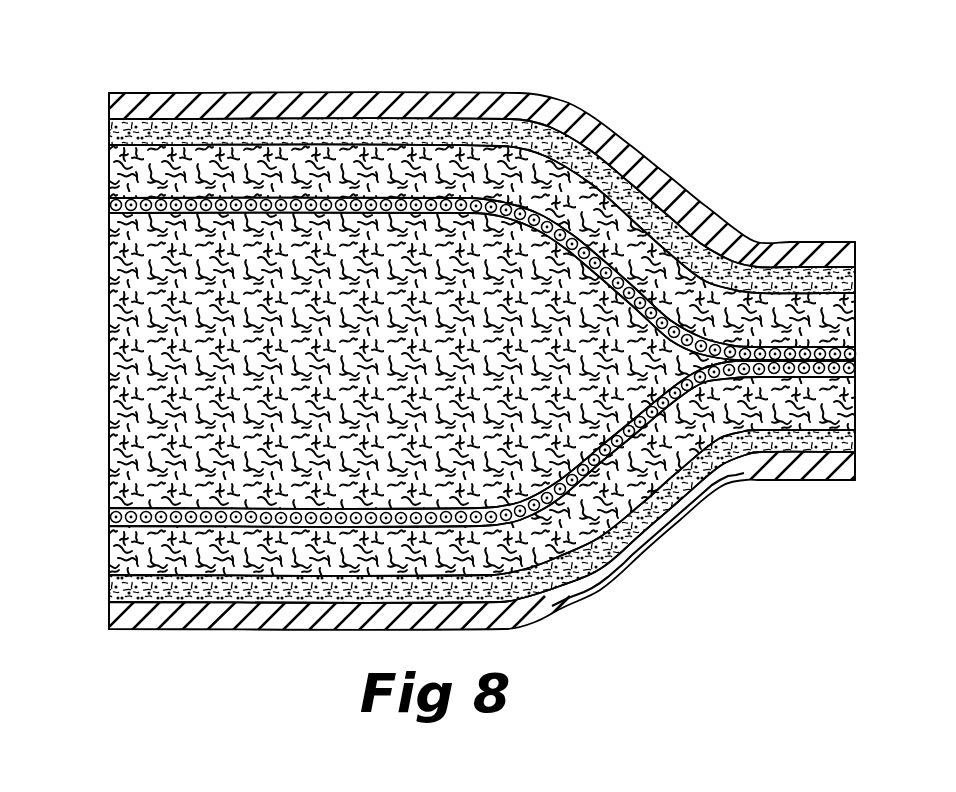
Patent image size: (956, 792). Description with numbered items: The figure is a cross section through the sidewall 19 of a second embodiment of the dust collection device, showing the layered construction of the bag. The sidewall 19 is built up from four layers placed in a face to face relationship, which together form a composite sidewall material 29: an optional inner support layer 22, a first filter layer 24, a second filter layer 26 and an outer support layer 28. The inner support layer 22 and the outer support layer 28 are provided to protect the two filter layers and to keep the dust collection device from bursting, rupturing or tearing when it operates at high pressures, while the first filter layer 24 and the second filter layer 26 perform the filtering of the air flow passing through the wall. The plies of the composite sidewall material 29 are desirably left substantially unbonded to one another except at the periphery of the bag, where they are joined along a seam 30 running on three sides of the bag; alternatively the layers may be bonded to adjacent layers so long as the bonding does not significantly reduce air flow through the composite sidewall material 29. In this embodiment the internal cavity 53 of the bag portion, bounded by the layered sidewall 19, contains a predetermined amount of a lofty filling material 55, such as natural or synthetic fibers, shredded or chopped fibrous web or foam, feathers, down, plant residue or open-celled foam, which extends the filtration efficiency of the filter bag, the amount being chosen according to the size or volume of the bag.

The sidewall 19 is at (388, 92).
The composite sidewall material 29 is at (100, 89).
The internal cavity 53 is at (115, 274).
The lofty filling material 55 is at (120, 395).
The inner support layer 22 is at (109, 515).
The first filter layer 24 is at (110, 538).
The second filter layer 26 is at (110, 588).
The outer support layer 28 is at (110, 616).
The seam 30 is at (808, 250).